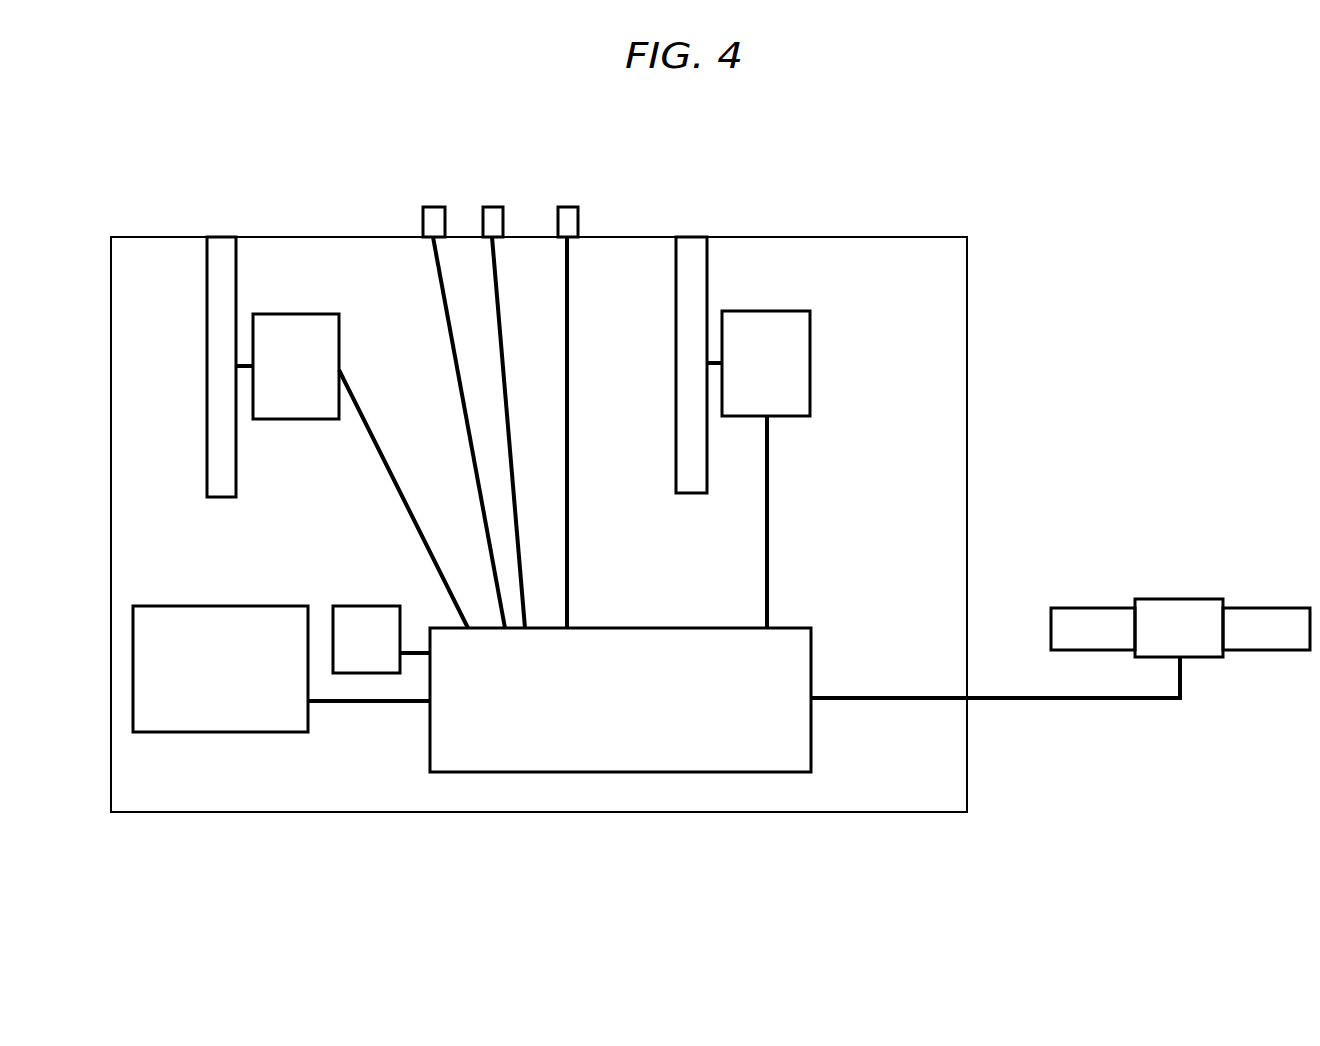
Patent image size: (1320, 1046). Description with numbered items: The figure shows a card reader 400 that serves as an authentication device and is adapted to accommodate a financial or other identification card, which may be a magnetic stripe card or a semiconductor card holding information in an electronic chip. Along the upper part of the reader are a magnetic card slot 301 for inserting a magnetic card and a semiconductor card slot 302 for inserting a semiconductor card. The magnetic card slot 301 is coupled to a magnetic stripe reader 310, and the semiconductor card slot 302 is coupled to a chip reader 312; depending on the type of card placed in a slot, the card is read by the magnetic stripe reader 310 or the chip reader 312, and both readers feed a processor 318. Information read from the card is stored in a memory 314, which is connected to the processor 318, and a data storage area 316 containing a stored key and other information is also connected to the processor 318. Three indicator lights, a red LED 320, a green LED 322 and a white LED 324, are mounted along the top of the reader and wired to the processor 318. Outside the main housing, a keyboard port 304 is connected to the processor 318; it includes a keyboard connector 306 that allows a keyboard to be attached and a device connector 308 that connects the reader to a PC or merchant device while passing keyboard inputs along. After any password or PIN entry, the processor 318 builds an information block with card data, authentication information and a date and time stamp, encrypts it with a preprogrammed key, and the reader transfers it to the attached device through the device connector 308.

The test system 400 is at (206, 185).
The magnetic card slot 301 is at (206, 360).
The semiconductor card slot 302 is at (676, 342).
The keyboard port 304 is at (1178, 598).
The keyboard connector 306 is at (1091, 607).
The device connector 308 is at (1266, 607).
The magnetic stripe reader 310 is at (298, 421).
The chip reader 312 is at (810, 343).
The memory 314 is at (180, 606).
The data storage area 316 is at (358, 606).
The processor 318 is at (428, 735).
The red LED 320 is at (423, 220).
The green LED 322 is at (494, 207).
The white LED 324 is at (578, 218).